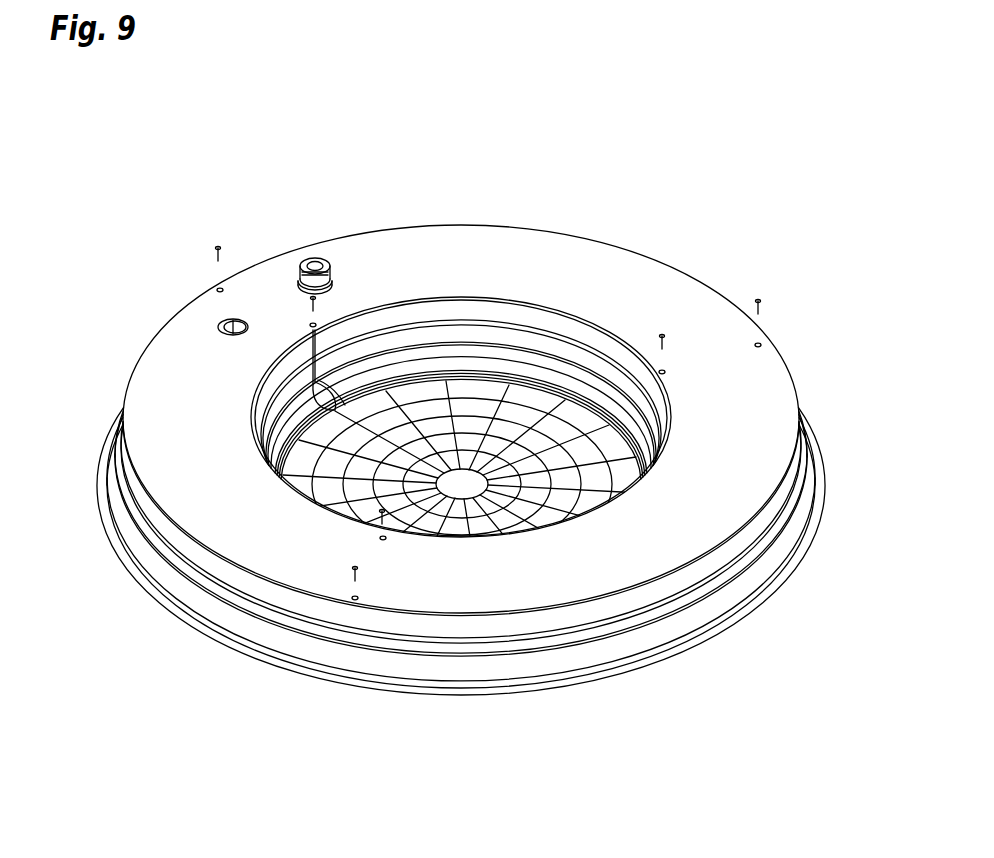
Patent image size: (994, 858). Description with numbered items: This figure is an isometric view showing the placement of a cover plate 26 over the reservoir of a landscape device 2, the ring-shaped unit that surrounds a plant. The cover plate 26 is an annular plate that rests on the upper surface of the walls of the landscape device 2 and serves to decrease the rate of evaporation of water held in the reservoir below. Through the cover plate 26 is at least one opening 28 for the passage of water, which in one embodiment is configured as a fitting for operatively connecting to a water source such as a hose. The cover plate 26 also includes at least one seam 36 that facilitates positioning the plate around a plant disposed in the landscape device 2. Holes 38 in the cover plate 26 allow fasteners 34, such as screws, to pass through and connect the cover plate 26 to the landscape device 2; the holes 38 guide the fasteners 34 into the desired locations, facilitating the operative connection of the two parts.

The landscape device 2 is at (560, 655).
The cover plate 26 is at (520, 257).
The opening 28 is at (306, 262).
The fasteners 34 is at (757, 290).
The seam 36 is at (183, 383).
The holes 38 is at (385, 538).